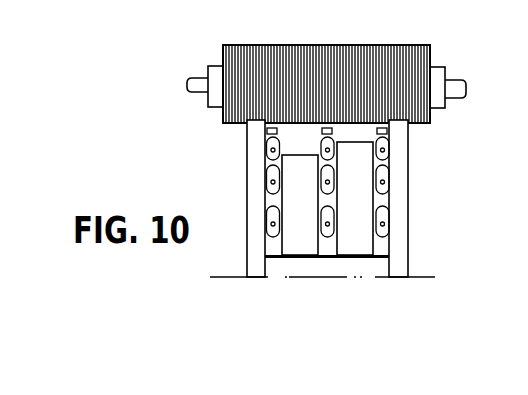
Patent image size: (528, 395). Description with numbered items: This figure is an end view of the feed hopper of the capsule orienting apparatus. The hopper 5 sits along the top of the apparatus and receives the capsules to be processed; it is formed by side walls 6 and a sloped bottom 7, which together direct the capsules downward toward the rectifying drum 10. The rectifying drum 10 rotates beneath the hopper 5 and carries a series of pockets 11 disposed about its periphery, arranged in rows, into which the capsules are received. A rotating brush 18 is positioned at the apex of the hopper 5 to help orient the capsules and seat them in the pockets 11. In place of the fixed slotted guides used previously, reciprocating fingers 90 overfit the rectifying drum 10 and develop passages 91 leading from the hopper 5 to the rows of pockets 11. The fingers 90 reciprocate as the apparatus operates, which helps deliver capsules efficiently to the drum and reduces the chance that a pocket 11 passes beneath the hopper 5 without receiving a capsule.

The rotating brush 18 is at (268, 46).
The rectifying drum 10 is at (328, 163).
The hopper 5 is at (334, 216).
The side walls 6 is at (253, 218).
The pockets 11 is at (266, 147).
The reciprocating fingers 90 is at (292, 238).
The passages 91 is at (380, 262).
The sloped bottom 7 is at (281, 265).